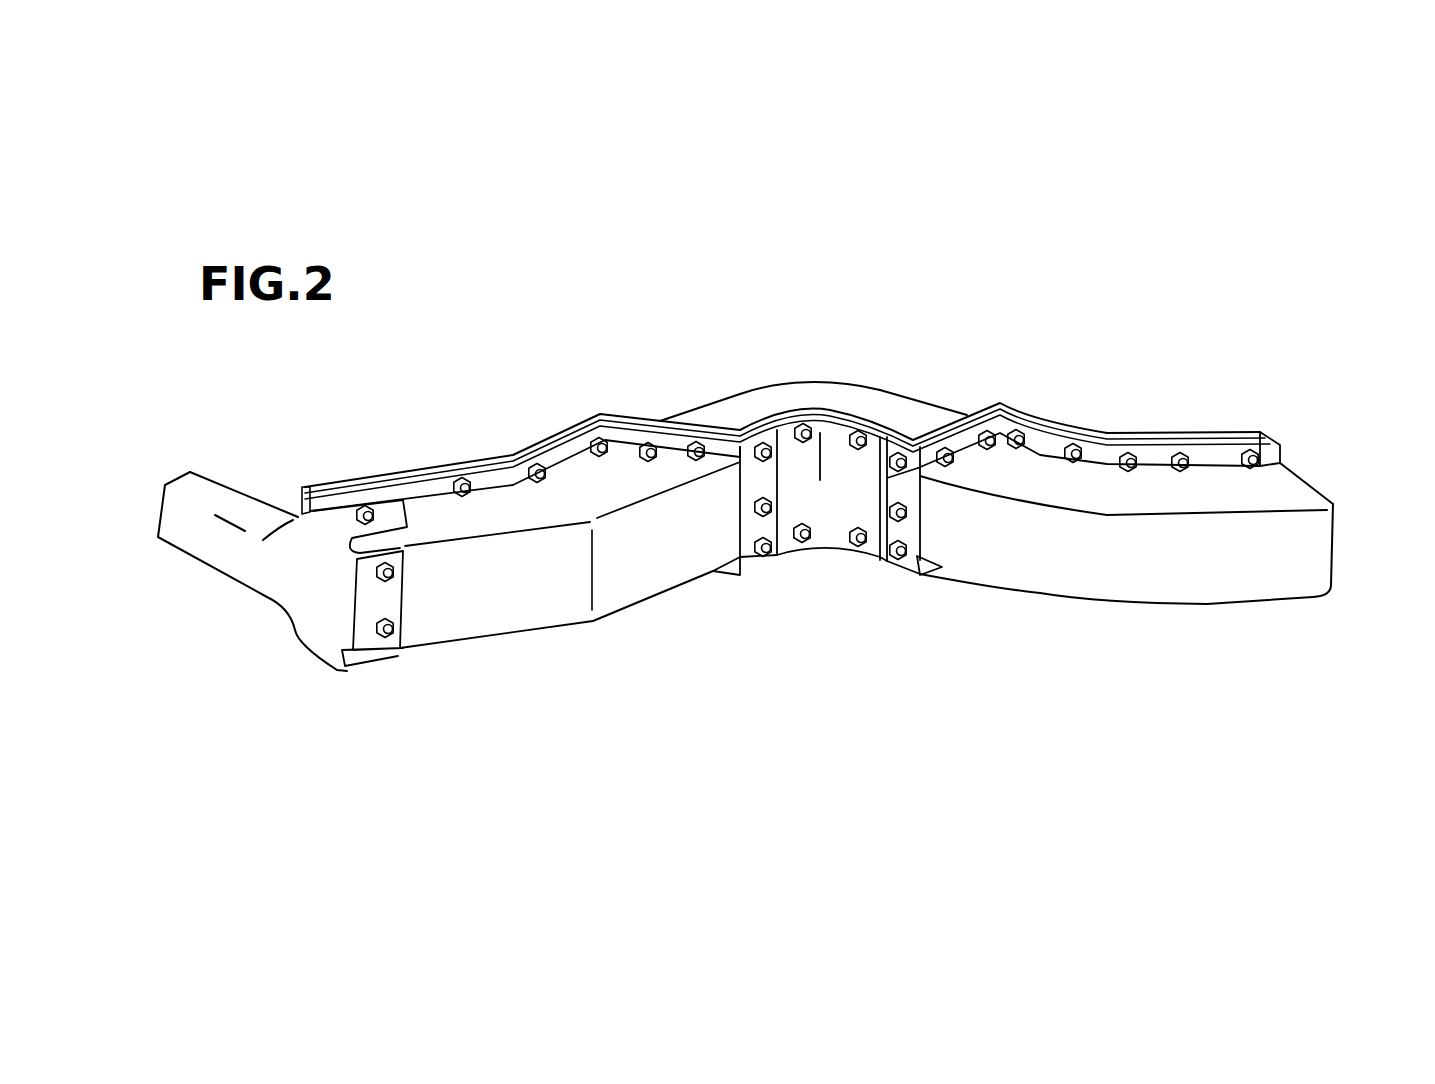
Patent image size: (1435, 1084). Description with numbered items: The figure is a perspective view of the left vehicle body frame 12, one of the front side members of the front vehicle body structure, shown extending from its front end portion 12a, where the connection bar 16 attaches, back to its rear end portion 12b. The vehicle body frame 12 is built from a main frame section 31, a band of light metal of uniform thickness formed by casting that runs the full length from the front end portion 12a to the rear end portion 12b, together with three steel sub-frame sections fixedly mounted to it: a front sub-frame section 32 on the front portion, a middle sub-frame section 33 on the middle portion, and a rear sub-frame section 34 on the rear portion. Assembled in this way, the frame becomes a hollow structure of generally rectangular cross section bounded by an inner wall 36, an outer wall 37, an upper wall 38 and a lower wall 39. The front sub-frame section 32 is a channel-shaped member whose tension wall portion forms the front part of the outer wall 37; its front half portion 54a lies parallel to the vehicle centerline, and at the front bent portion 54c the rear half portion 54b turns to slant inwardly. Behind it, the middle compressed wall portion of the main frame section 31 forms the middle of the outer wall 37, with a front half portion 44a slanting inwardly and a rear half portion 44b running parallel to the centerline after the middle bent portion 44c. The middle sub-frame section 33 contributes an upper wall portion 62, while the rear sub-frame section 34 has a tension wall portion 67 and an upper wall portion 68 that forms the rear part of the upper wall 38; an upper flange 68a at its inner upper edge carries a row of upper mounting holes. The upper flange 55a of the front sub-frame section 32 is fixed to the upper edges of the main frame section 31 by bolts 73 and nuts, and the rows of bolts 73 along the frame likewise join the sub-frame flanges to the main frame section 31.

The left vehicle body frame 12 is at (512, 340).
The front end portion 12a is at (302, 486).
The rear end portion 12b is at (1315, 552).
The connection bar 16 is at (185, 540).
The main frame section 31 is at (440, 462).
The front sub-frame section 32 is at (450, 648).
The middle sub-frame section 33 is at (733, 390).
The rear sub-frame section 34 is at (1193, 605).
The inner wall 36 is at (880, 393).
The outer wall 37 is at (660, 565).
The upper wall 38 is at (622, 482).
The lower wall 39 is at (622, 613).
The front half portion 44a is at (787, 430).
The rear half portion 44b is at (838, 437).
The middle bent portion 44c is at (820, 482).
The front half portion 54a is at (497, 612).
The rear half portion 54b is at (700, 548).
The front bent portion 54c is at (580, 588).
The upper flange 55a is at (562, 445).
The upper wall portion 62 is at (912, 412).
The tension wall portion 67 is at (1070, 583).
The upper wall portion 68 is at (1283, 496).
The upper flange 68a is at (1047, 440).
The bolts 73 is at (540, 466).